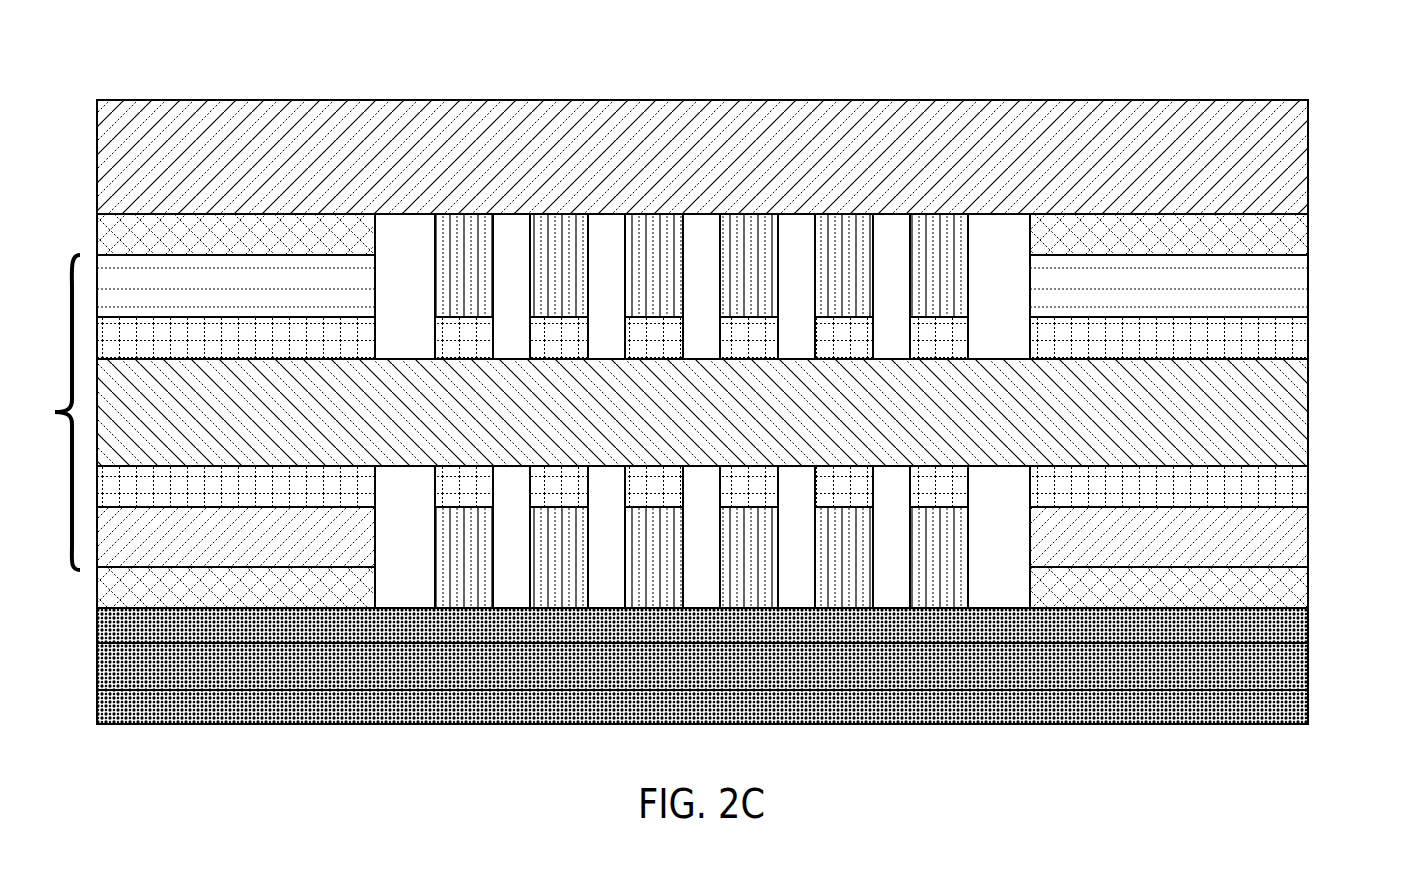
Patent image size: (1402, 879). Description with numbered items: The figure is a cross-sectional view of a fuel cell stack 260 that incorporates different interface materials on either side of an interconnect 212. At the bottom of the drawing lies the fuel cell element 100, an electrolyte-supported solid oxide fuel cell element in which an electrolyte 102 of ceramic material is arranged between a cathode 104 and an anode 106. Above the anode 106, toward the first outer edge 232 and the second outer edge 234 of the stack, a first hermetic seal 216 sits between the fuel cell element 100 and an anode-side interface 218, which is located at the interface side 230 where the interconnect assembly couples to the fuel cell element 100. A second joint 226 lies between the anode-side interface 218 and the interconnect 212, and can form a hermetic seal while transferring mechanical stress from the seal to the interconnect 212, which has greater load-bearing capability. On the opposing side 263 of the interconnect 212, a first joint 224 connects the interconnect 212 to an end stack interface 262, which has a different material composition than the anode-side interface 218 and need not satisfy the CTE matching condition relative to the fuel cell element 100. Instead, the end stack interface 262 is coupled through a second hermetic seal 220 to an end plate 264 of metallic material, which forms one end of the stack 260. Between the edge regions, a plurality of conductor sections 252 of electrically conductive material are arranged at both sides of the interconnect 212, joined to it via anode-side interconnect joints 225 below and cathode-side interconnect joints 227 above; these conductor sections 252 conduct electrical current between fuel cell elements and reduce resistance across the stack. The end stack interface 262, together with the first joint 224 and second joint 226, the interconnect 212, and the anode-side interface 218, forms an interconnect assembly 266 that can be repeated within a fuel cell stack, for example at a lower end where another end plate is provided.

The fuel cell element 100 is at (990, 748).
The electrolyte 102 is at (788, 676).
The cathode 104 is at (767, 718).
The anode 106 is at (753, 635).
The interconnect 212 is at (796, 421).
The first hermetic seal 216 is at (1261, 600).
The anode-side interface 218 is at (1183, 563).
The second hermetic seal 220 is at (1261, 246).
The first joint 224 is at (1244, 350).
The anode-side interconnect joints 225 is at (479, 498).
The second joint 226 is at (1256, 498).
The cathode-side interconnect joints 227 is at (479, 346).
The interface side 230 is at (386, 536).
The first outer edge 232 is at (1345, 669).
The second outer edge 234 is at (58, 668).
The conductor sections 252 is at (479, 275).
The fuel cell stack 260 is at (705, 65).
The end stack interface 262 is at (1298, 296).
The opposing side 263 is at (386, 293).
The end plate 264 is at (772, 165).
The interconnect assembly 266 is at (72, 556).